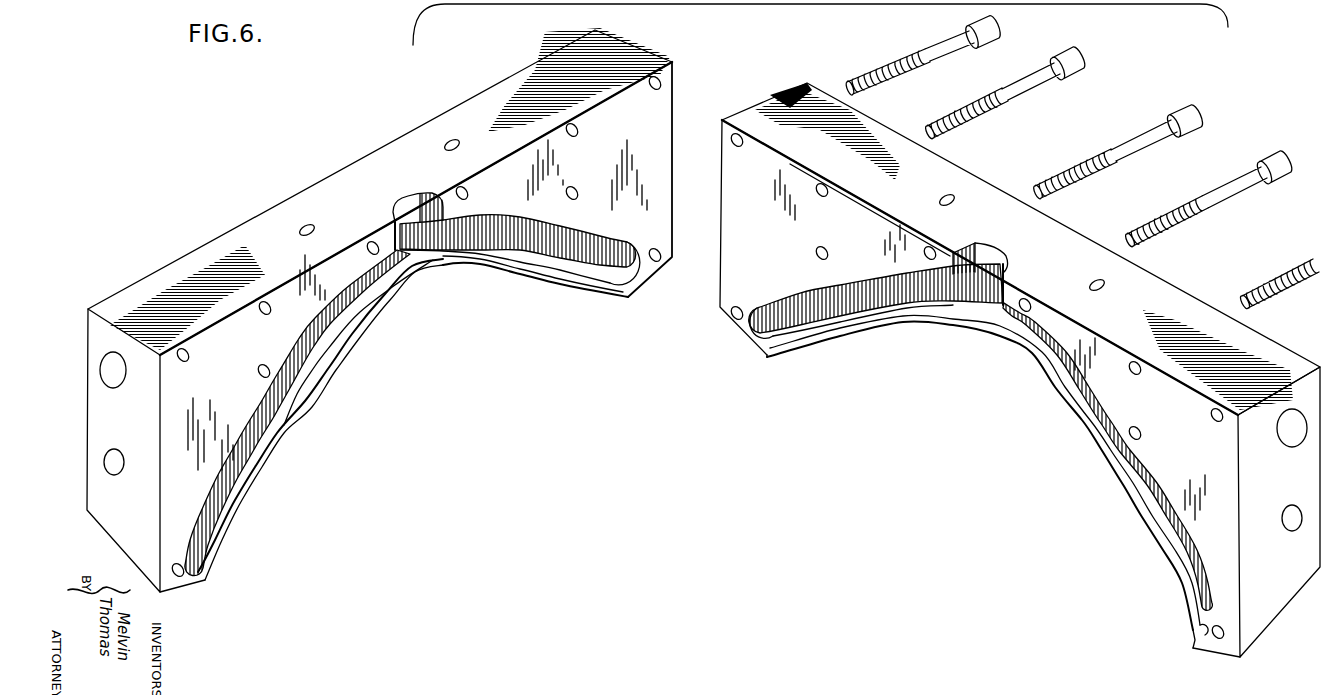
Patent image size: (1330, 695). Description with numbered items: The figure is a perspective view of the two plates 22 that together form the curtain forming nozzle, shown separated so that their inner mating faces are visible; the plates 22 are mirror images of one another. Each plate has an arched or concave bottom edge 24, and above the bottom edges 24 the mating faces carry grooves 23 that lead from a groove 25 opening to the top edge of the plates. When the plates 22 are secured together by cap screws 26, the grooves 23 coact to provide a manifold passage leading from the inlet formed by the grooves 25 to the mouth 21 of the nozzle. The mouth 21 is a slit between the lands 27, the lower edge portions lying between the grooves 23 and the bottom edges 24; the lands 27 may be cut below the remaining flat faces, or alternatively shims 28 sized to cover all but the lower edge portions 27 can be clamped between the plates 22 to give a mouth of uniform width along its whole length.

The mouth 21 is at (990, 338).
The plates 22 is at (273, 347).
The grooves 23 is at (535, 257).
The bottom edges 24 is at (490, 268).
The groove 25 is at (412, 206).
The cap screws 26 is at (1180, 112).
The lands 27 is at (278, 433).
The shims 28 is at (760, 260).